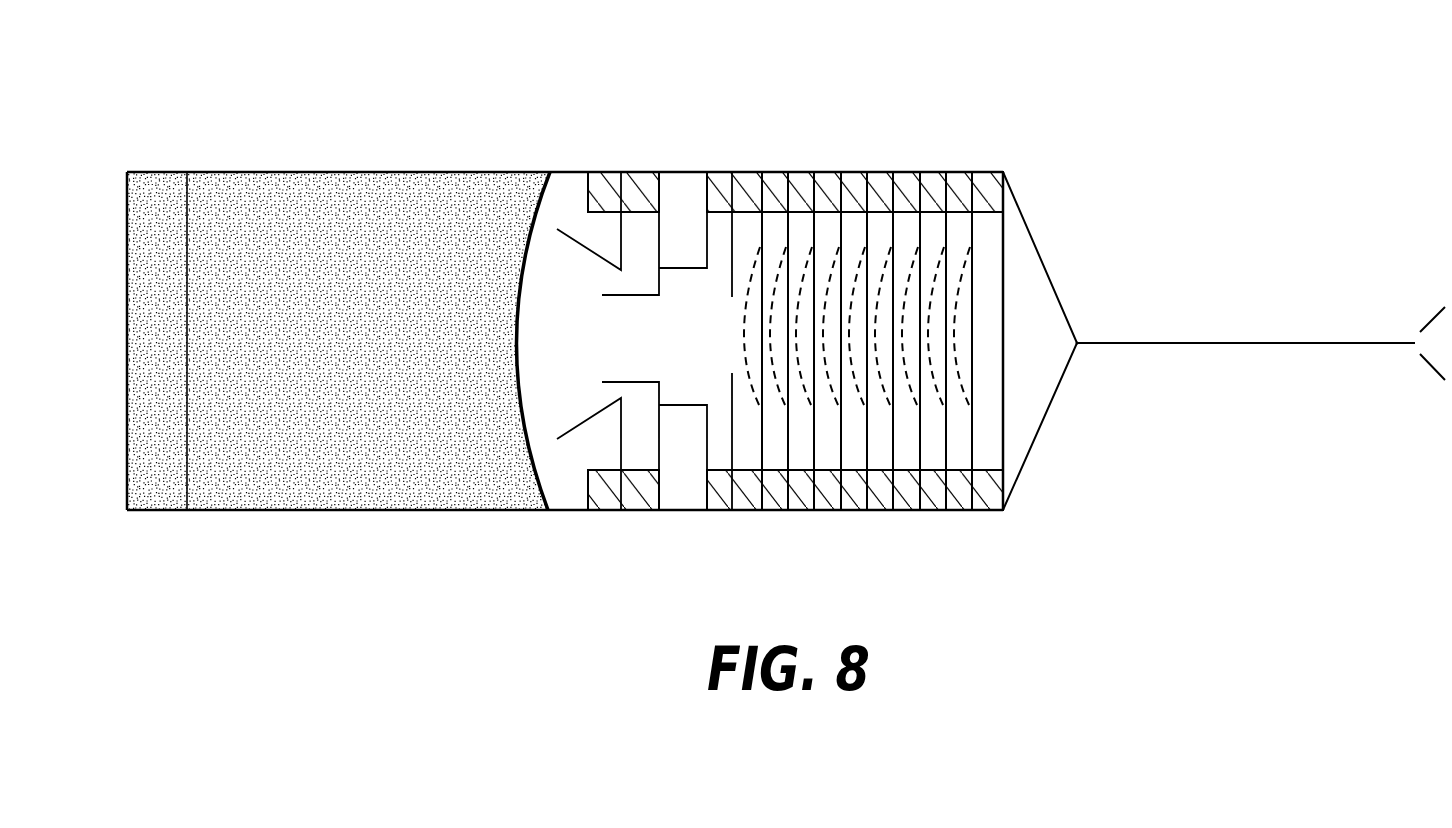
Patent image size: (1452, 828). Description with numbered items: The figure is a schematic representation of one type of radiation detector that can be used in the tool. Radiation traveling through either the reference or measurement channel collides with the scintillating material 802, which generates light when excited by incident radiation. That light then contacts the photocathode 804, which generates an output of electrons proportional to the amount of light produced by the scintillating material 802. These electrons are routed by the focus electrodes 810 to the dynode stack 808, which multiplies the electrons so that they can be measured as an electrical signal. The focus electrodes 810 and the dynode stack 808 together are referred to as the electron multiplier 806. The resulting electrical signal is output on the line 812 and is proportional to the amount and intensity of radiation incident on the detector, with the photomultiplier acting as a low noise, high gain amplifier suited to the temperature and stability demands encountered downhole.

The scintillating material 802 is at (295, 213).
The photocathode 804 is at (525, 233).
The electron multiplier 806 is at (577, 520).
The dynode stack 808 is at (1005, 166).
The focus electrodes 810 is at (732, 166).
The line 812 is at (1238, 343).